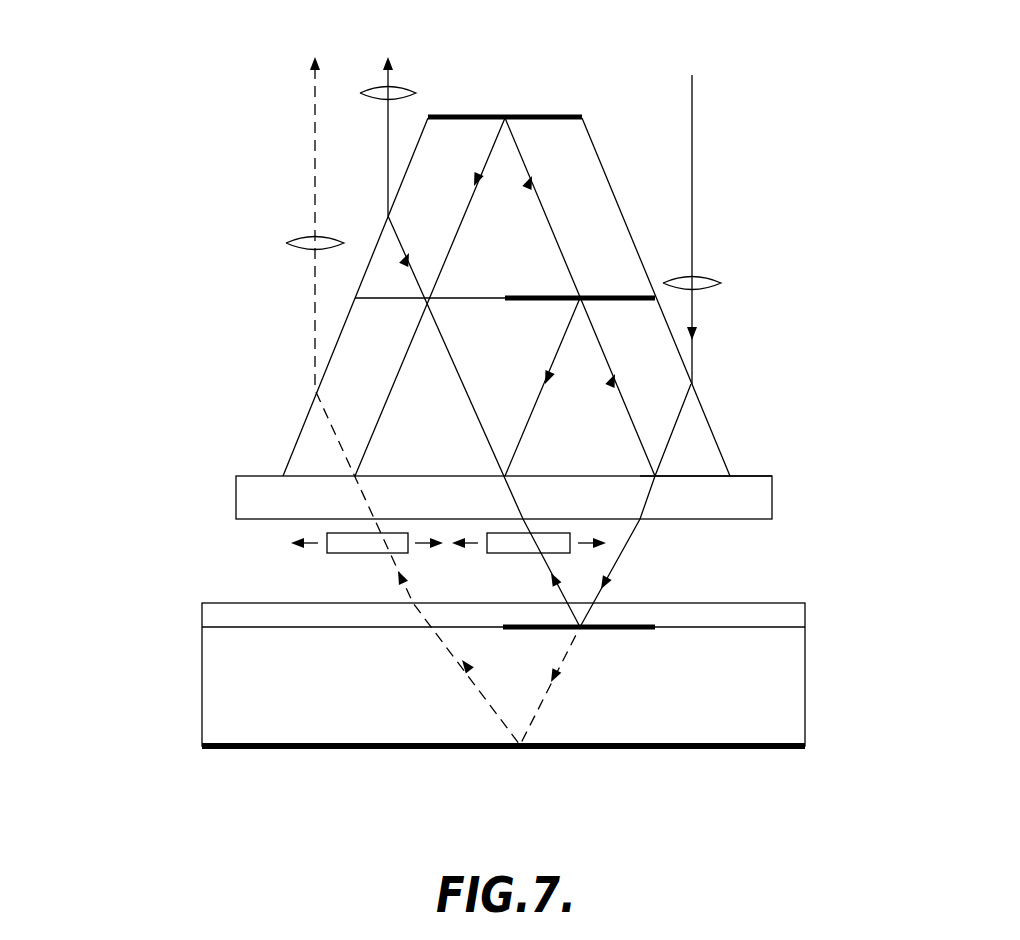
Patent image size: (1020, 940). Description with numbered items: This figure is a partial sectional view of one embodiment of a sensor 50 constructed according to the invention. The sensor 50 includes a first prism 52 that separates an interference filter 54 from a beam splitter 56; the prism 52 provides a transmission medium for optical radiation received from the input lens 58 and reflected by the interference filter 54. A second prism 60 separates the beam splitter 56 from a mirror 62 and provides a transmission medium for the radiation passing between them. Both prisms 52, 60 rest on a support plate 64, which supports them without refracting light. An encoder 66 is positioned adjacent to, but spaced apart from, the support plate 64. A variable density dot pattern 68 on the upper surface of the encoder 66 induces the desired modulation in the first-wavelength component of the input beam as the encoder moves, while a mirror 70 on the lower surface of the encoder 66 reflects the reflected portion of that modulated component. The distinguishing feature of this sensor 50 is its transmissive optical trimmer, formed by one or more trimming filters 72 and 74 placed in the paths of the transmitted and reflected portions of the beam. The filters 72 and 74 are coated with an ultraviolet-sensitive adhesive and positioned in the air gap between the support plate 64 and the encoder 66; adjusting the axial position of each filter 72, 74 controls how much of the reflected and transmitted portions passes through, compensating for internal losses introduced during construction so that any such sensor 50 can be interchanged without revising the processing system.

The sensor 50 is at (158, 338).
The first prism 52 is at (712, 428).
The interference filter 54 is at (733, 476).
The beam splitter 56 is at (612, 296).
The input lens 58 is at (714, 282).
The second prism 60 is at (600, 165).
The mirror 62 is at (470, 114).
The support plate 64 is at (236, 498).
The encoder 66 is at (202, 680).
The variable density dot pattern 68 is at (630, 631).
The mirror 70 is at (780, 744).
The trimming filter 72 is at (336, 553).
The trimming filter 74 is at (487, 553).